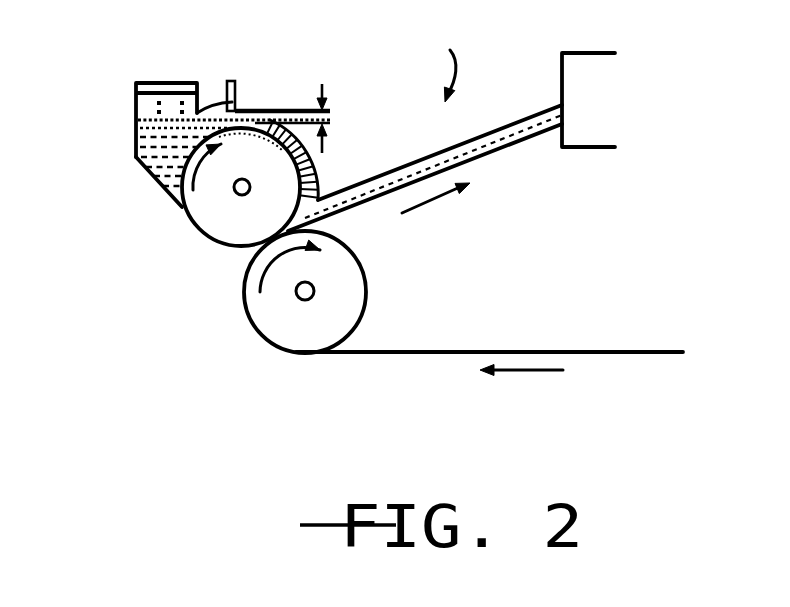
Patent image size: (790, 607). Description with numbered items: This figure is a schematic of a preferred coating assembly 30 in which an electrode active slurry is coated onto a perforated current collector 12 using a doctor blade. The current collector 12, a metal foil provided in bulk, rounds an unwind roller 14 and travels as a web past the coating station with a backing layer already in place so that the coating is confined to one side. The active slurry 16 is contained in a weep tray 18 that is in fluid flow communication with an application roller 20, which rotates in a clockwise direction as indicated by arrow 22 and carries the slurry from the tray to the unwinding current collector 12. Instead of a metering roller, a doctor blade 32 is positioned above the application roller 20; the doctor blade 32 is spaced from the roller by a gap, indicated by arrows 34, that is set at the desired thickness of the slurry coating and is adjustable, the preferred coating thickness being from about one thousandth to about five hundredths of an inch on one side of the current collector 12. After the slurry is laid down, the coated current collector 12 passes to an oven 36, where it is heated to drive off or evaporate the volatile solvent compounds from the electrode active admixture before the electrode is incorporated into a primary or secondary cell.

The current collector 12 is at (466, 351).
The unwind roller 14 is at (343, 280).
The active slurry 16 is at (170, 104).
The weep tray 18 is at (135, 110).
The application roller 20 is at (217, 219).
The arrow 22 is at (218, 168).
The assembly 30 is at (425, 122).
The doctor blade 32 is at (232, 88).
The arrows 34 is at (330, 121).
The oven 36 is at (582, 138).